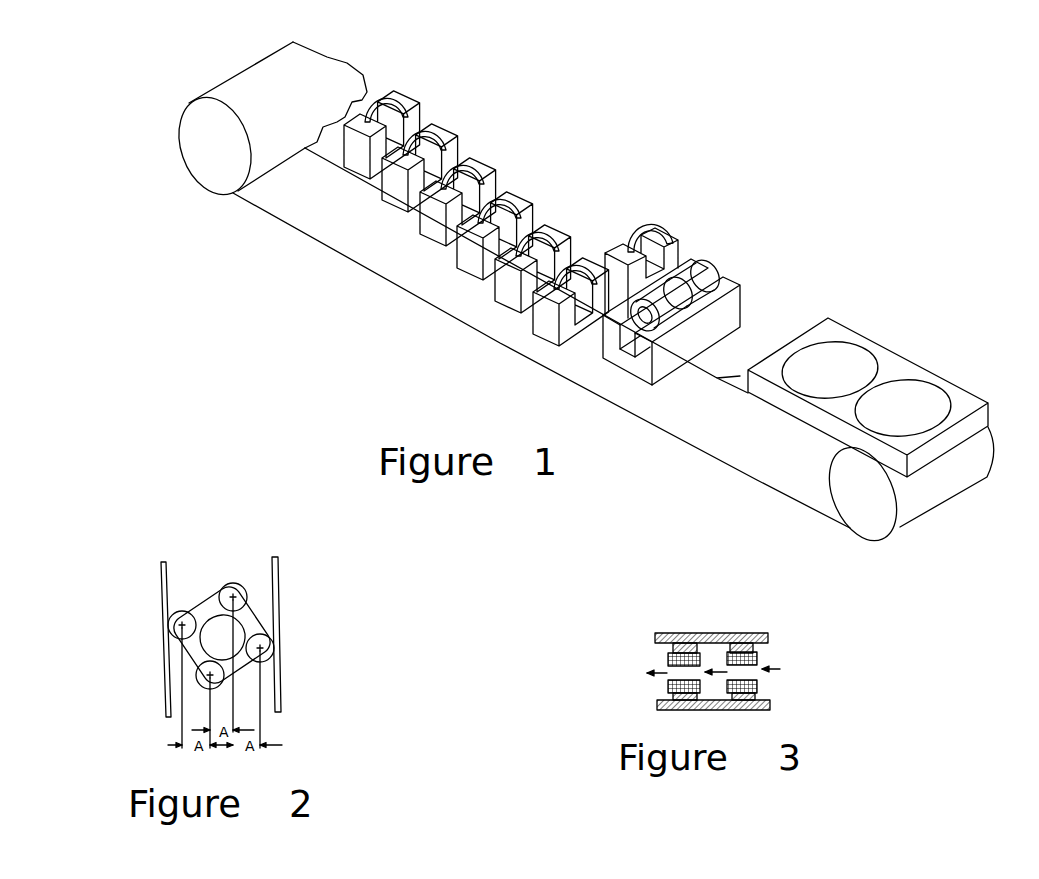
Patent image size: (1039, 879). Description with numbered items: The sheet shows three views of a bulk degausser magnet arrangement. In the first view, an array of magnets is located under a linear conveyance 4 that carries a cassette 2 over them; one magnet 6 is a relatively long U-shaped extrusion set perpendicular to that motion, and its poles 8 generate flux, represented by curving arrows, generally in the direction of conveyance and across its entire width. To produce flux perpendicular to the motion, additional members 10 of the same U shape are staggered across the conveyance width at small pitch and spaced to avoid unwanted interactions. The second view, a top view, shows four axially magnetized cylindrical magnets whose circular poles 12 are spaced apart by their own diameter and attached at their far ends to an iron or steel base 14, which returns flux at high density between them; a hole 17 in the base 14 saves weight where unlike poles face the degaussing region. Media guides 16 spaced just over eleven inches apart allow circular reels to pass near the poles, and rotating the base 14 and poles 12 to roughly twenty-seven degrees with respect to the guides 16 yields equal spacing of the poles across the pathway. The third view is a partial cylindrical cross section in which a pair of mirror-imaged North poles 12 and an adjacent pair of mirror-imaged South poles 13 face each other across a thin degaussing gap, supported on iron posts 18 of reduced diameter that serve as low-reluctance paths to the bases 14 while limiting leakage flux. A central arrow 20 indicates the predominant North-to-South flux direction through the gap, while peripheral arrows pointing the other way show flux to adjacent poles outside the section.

In FIG. 1, the cassette 2 is at (894, 362).
In FIG. 1, the linear conveyance 4 is at (318, 80).
In FIG. 1, the magnet 6 is at (742, 380).
In FIG. 1, the poles 8 is at (668, 233).
In FIG. 1, the additional members 10 is at (548, 343).
In FIG. 2, the circular poles 12 is at (186, 612).
In FIG. 3, the circular poles 12 is at (673, 681).
In FIG. 3, the South poles 13 is at (748, 663).
In FIG. 2, the base 14 is at (255, 619).
In FIG. 3, the base 14 is at (655, 638).
In FIG. 2, the media guides 16 is at (162, 701).
In FIG. 2, the hole 17 is at (212, 656).
In FIG. 3, the supporting iron posts 18 is at (673, 648).
In FIG. 3, the central arrow 20 is at (740, 667).